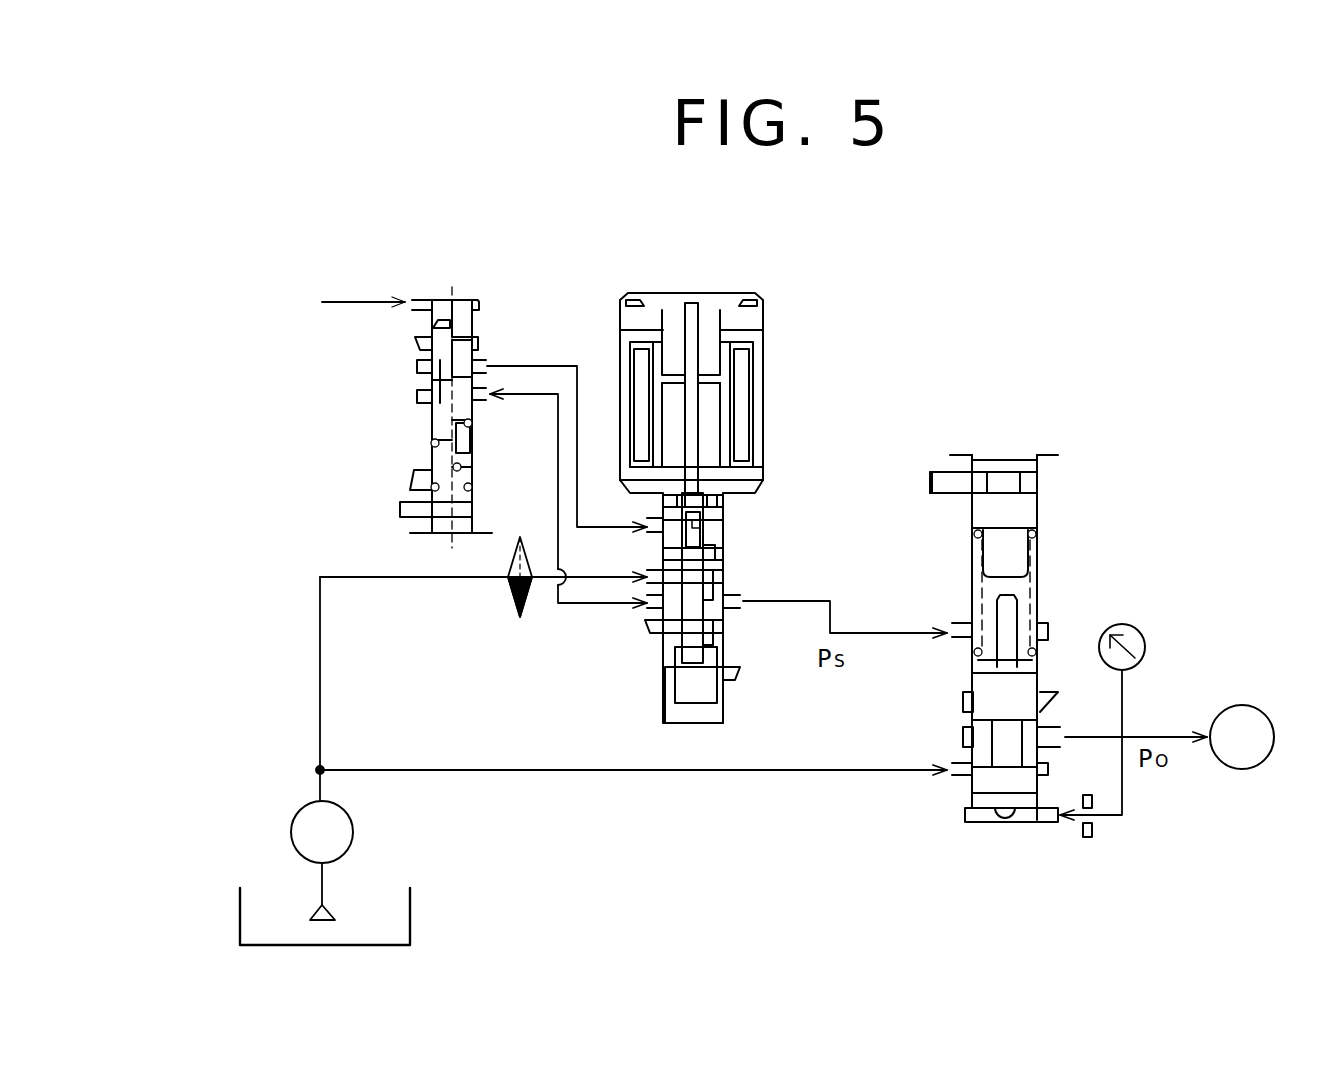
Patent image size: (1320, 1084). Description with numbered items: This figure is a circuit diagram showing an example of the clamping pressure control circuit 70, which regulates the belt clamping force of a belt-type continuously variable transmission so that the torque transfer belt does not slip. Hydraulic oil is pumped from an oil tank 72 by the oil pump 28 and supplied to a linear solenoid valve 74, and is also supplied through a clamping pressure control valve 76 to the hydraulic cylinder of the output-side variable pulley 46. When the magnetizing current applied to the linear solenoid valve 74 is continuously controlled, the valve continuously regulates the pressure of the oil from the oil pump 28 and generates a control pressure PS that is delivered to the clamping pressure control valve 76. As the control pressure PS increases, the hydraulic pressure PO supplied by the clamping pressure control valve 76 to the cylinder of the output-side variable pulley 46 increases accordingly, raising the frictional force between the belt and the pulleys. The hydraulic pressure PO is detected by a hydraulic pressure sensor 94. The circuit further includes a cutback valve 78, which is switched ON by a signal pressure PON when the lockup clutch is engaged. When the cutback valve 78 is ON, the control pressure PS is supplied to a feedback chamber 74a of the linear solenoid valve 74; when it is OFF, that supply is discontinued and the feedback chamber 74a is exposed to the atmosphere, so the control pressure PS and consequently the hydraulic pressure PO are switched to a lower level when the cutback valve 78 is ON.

The cutback valve 78 is at (488, 240).
The linear solenoid valve 74 is at (730, 277).
The feedback chamber 74a is at (723, 522).
The clamping pressure control circuit 70 is at (1050, 360).
The clamping pressure control valve 76 is at (1028, 435).
The hydraulic pressure sensor 94 is at (1123, 623).
The output-side variable pulley 46 is at (1242, 706).
The oil pump 28 is at (293, 833).
The oil tank 72 is at (410, 918).